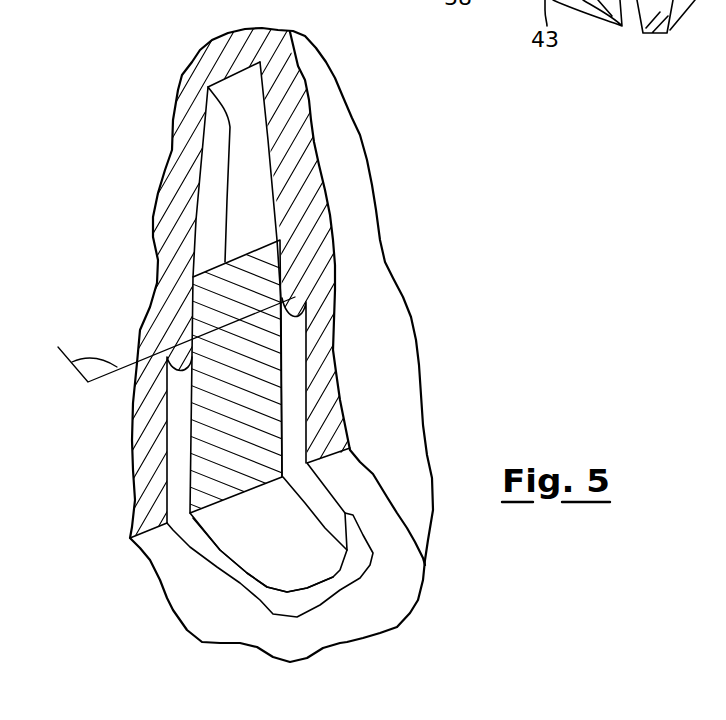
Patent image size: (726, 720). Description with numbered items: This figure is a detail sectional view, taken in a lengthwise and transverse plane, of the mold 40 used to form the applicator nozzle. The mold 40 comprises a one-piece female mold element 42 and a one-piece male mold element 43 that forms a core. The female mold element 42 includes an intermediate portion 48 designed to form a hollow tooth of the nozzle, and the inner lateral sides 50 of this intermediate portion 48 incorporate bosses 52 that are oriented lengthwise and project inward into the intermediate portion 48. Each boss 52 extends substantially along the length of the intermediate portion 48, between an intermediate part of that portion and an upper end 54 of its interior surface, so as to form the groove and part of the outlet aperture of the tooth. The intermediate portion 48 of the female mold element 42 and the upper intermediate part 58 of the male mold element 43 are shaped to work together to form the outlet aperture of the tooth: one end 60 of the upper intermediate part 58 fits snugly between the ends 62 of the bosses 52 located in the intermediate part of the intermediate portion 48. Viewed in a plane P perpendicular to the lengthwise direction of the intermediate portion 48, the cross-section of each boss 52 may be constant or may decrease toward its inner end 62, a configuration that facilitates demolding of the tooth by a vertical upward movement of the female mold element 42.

The mold 40 is at (101, 128).
The female mold element 42 is at (283, 82).
The male mold element 43 is at (220, 472).
The intermediate portion 48 is at (215, 163).
The inner lateral sides 50 is at (303, 363).
The boss 52 is at (234, 155).
The upper end 54 is at (233, 66).
The upper intermediate part 58 is at (220, 428).
The end 60 is at (252, 282).
The end 62 is at (287, 290).
The plane P is at (176, 339).